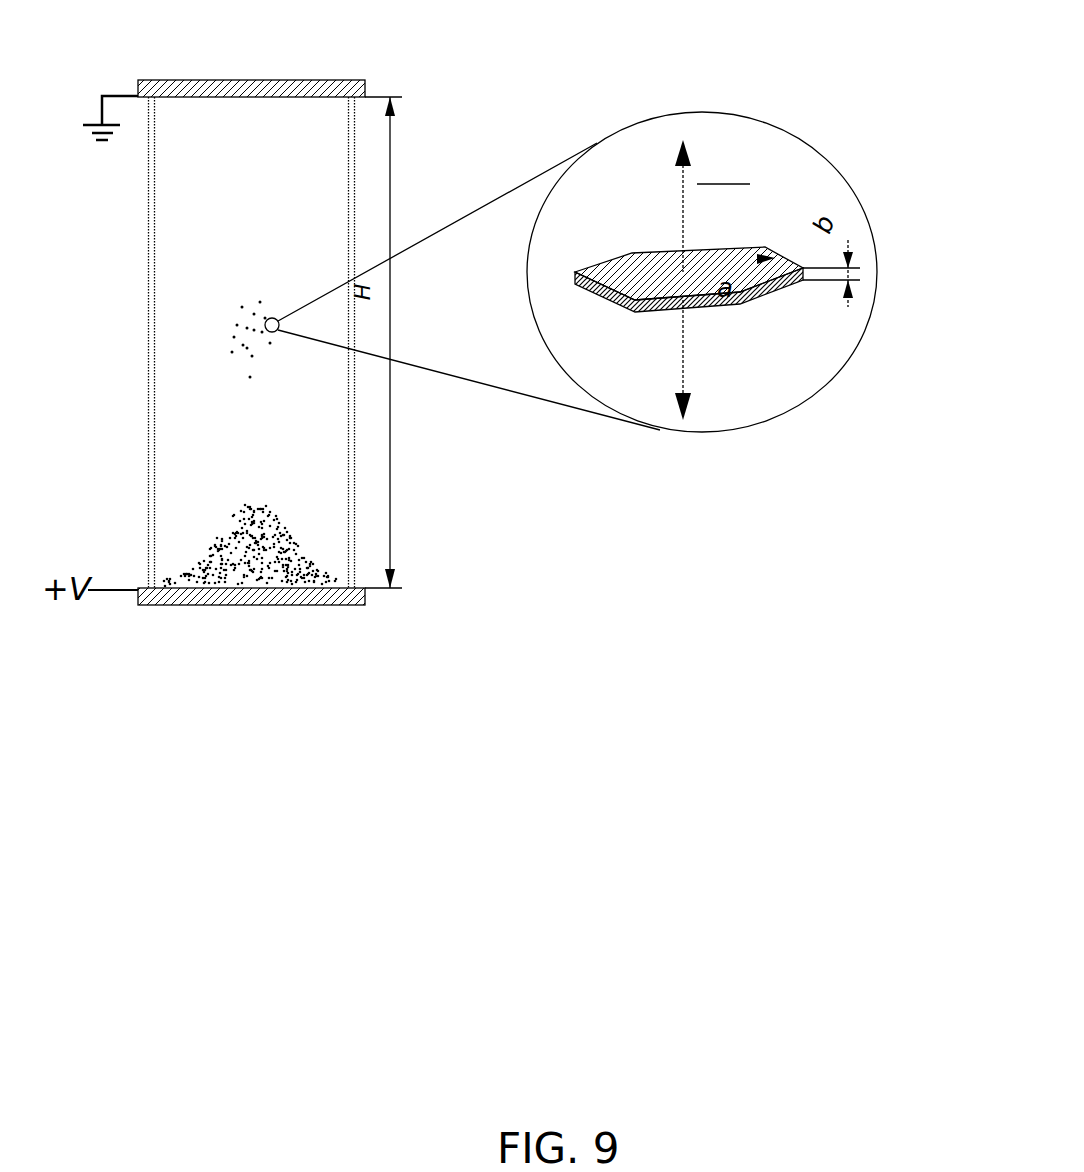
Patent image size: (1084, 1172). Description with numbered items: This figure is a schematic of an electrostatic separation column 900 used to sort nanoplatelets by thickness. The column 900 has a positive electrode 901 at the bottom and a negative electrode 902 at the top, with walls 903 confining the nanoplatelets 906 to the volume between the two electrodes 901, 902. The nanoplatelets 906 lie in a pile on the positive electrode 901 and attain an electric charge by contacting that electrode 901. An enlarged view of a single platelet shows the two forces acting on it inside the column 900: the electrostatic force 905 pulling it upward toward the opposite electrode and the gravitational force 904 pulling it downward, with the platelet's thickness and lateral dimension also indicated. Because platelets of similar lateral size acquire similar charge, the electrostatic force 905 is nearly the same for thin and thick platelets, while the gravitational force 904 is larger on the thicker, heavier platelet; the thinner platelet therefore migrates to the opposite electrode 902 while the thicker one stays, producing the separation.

The electrostatic separation column 900 is at (210, 342).
The positive electrode 901 is at (255, 632).
The negative electrode 902 is at (257, 54).
The walls 903 is at (233, 337).
The gravitational force 904 is at (780, 356).
The electrostatic force 905 is at (790, 186).
The nanoplatelets 906 is at (180, 343).